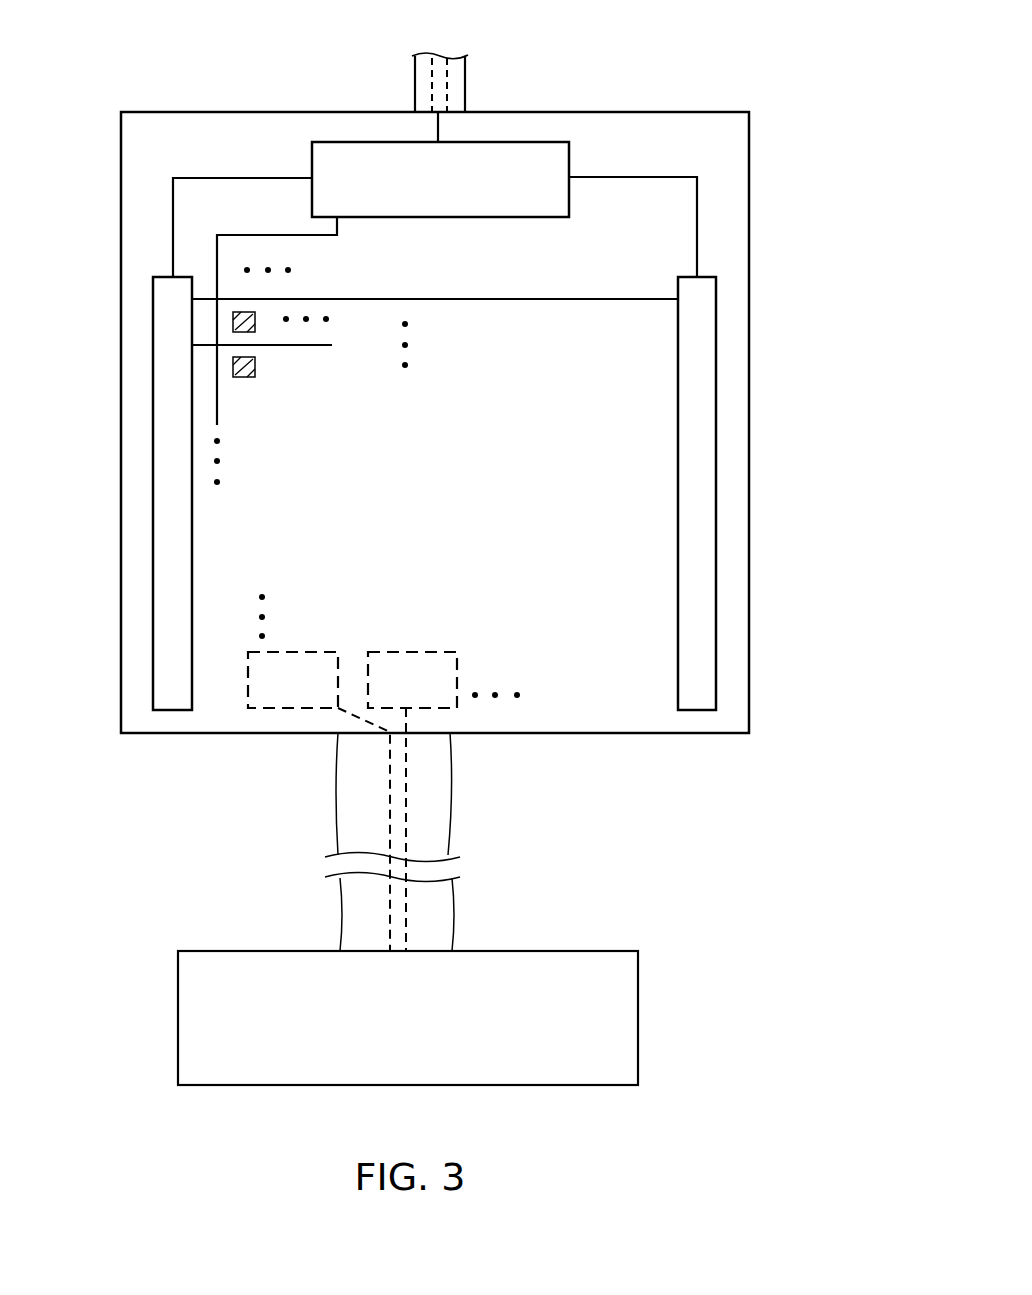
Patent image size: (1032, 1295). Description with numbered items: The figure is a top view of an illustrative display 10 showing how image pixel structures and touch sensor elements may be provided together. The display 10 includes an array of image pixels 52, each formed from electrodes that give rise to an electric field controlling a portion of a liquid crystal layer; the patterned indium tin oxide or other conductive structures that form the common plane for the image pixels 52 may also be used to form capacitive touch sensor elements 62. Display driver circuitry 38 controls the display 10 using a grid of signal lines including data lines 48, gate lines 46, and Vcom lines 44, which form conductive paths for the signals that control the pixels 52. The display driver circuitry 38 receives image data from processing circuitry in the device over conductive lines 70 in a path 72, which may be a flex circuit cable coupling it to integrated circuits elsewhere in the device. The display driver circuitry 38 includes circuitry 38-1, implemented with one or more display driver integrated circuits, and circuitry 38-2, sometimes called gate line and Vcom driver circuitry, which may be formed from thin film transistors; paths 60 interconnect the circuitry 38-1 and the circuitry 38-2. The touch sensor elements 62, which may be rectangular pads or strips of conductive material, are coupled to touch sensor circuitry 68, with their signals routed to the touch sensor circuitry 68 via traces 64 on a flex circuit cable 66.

The display 10 is at (718, 68).
The display driver circuitry 38 is at (268, 153).
The circuitry 38-1 is at (569, 160).
The circuitry 38-2 is at (164, 548).
The conductive lines 70 is at (447, 91).
The path 72 is at (415, 83).
The paths 60 is at (173, 236).
The data lines 48 is at (337, 236).
The gate lines 46 is at (470, 299).
The Vcom lines 44 is at (320, 347).
The image pixels 52 is at (256, 315).
The touch sensor elements 62 is at (315, 652).
The traces 64 is at (392, 745).
The flex circuit cable 66 is at (450, 811).
The touch sensor circuitry 68 is at (578, 951).